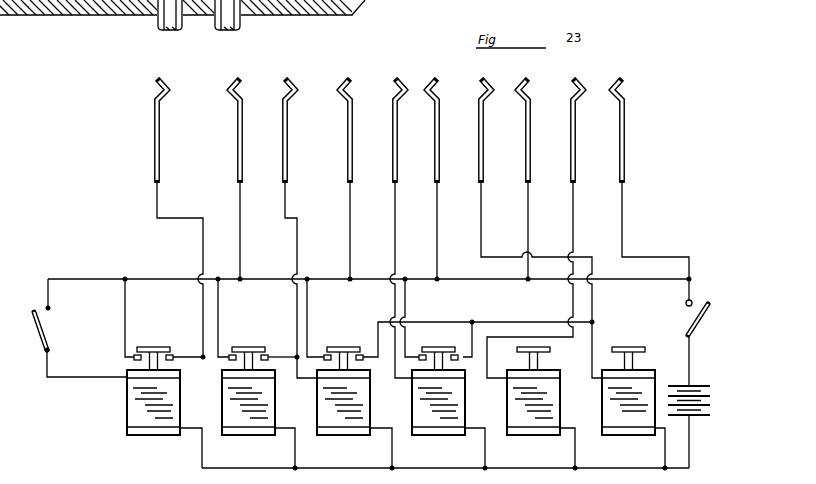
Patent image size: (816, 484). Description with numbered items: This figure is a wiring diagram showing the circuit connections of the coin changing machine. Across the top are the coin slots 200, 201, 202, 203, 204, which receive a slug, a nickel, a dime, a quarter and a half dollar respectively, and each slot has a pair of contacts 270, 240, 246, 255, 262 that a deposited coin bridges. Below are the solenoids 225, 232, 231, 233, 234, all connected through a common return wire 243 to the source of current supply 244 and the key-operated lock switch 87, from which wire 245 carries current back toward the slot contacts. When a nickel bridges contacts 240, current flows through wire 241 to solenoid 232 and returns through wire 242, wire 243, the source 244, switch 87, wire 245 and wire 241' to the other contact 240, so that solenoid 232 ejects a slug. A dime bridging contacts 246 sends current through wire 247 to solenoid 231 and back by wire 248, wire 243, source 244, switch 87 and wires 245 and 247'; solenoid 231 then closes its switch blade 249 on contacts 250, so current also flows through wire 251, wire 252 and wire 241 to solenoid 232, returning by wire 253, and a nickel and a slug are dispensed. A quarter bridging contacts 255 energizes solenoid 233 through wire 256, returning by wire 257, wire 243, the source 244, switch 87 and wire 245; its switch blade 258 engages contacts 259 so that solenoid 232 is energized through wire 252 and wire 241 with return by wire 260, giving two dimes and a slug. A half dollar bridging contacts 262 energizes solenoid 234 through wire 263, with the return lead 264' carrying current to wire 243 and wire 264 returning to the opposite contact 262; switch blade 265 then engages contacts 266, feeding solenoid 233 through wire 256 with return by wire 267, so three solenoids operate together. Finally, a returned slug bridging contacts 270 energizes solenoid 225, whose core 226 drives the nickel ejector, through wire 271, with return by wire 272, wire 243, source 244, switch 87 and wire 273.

The core 226 is at (213, 27).
The coin slot 204 is at (198, 120).
The coin slot 203 is at (317, 120).
The coin slot 202 is at (416, 122).
The coin slot 201 is at (504, 122).
The coin slot 200 is at (597, 122).
The contacts 262 is at (238, 143).
The contacts 255 is at (349, 143).
The contacts 246 is at (435, 146).
The contacts 240 is at (527, 145).
The contacts 270 is at (621, 135).
The wire 263 is at (157, 200).
The wire 264 is at (258, 231).
The wire 256 is at (298, 241).
The wire 257 is at (350, 230).
The wire 247 is at (407, 279).
The wire 247' is at (420, 231).
The wire 241 is at (555, 279).
The wire 241' is at (510, 231).
The wire 271 is at (574, 215).
The wire 273 is at (623, 235).
The wire 245 is at (633, 279).
The wire 267 is at (220, 304).
The switch blade 265 is at (246, 346).
The contacts 266 is at (233, 355).
The wire 260 is at (309, 306).
The switch blade 258 is at (341, 347).
The contacts 259 is at (326, 355).
The wire 253 is at (409, 306).
The wire 251 is at (472, 322).
The wire 252 is at (521, 322).
The switch blade 249 is at (438, 347).
The contacts 250 is at (421, 355).
The solenoid 234 is at (260, 421).
The solenoid 233 is at (360, 421).
The solenoid 231 is at (455, 421).
The solenoid 225 is at (546, 425).
The solenoid 232 is at (646, 424).
The conductor 264' is at (305, 449).
The wire 248 is at (487, 457).
The wire 272 is at (578, 457).
The wire 242 is at (667, 455).
The wire 243 is at (690, 468).
The key-operated lock switch 87 is at (700, 323).
The source of current supply 244 is at (705, 402).